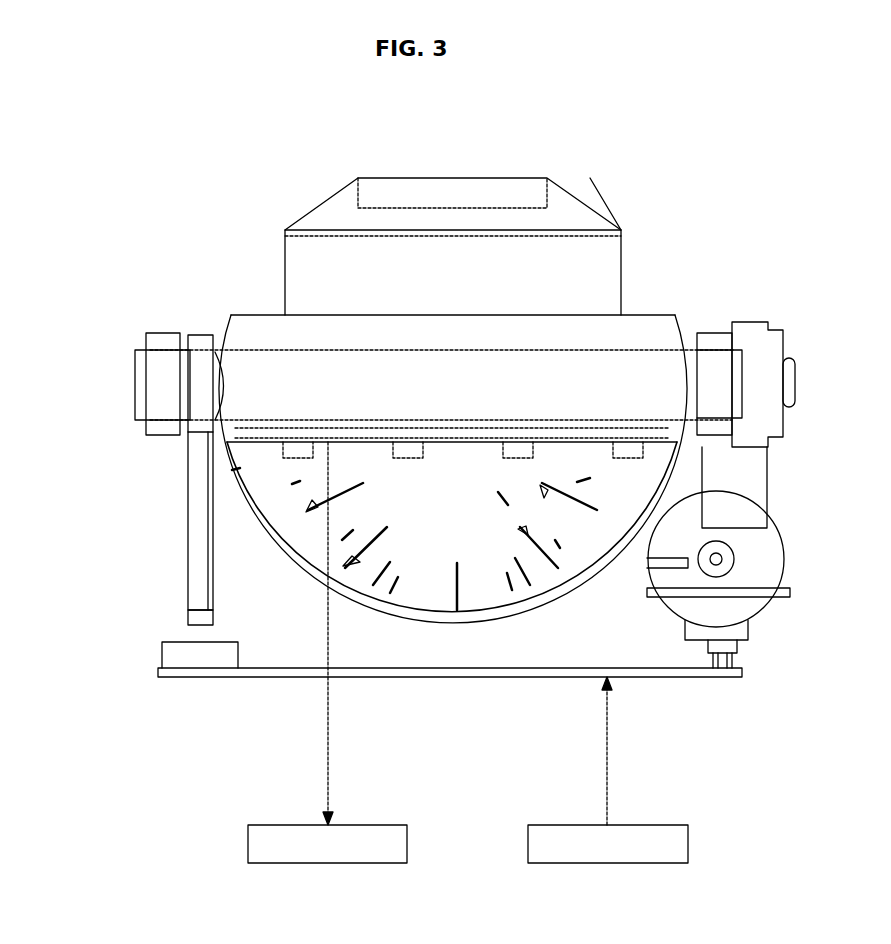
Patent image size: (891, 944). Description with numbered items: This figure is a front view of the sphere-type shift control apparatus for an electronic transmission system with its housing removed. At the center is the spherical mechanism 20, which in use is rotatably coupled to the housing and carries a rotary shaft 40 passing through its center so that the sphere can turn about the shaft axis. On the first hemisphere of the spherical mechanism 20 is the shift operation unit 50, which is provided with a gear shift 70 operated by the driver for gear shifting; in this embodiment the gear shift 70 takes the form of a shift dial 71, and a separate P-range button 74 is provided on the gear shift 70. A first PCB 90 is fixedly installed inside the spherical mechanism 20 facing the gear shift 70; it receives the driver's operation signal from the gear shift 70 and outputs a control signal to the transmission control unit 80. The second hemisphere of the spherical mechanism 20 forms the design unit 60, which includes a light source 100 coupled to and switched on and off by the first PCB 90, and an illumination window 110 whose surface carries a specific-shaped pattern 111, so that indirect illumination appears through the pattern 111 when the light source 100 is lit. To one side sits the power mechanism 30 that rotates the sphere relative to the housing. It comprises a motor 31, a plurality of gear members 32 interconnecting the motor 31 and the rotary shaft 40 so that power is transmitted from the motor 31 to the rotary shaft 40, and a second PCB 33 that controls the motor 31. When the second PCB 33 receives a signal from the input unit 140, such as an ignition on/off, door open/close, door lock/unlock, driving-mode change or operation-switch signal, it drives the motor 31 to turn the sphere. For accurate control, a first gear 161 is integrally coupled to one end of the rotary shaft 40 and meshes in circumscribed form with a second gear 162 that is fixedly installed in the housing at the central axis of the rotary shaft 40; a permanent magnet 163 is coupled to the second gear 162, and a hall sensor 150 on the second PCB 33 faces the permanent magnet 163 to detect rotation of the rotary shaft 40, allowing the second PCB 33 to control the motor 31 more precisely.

The spherical mechanism 20 is at (258, 308).
The power mechanism 30 is at (768, 607).
The motor 31 is at (773, 552).
The gear members 32 is at (770, 340).
The second PCB 33 is at (258, 677).
The rotary shaft 40 is at (638, 340).
The shift operation unit 50 is at (625, 228).
The design unit 60 is at (473, 626).
The gear shift 70 is at (575, 196).
The shift dial 71 is at (312, 240).
The P-range button 74 is at (455, 182).
The transmission control unit 80 is at (247, 843).
The first PCB 90 is at (240, 440).
The light source 100 is at (290, 462).
The illumination window 110 is at (590, 553).
The pattern 111 is at (457, 612).
The input unit 140 is at (690, 843).
The hall sensor 150 is at (175, 660).
The first gear 161 is at (200, 335).
The second gear 162 is at (197, 541).
The permanent magnet 163 is at (193, 617).